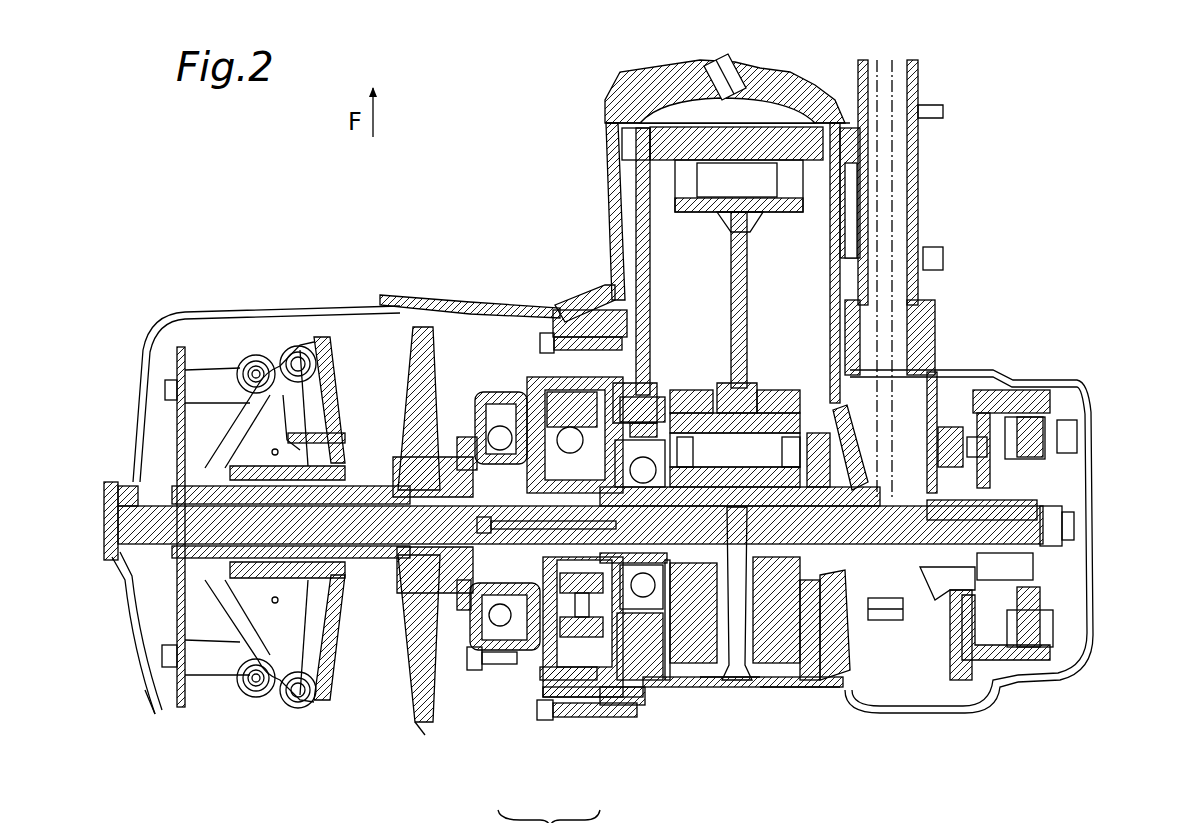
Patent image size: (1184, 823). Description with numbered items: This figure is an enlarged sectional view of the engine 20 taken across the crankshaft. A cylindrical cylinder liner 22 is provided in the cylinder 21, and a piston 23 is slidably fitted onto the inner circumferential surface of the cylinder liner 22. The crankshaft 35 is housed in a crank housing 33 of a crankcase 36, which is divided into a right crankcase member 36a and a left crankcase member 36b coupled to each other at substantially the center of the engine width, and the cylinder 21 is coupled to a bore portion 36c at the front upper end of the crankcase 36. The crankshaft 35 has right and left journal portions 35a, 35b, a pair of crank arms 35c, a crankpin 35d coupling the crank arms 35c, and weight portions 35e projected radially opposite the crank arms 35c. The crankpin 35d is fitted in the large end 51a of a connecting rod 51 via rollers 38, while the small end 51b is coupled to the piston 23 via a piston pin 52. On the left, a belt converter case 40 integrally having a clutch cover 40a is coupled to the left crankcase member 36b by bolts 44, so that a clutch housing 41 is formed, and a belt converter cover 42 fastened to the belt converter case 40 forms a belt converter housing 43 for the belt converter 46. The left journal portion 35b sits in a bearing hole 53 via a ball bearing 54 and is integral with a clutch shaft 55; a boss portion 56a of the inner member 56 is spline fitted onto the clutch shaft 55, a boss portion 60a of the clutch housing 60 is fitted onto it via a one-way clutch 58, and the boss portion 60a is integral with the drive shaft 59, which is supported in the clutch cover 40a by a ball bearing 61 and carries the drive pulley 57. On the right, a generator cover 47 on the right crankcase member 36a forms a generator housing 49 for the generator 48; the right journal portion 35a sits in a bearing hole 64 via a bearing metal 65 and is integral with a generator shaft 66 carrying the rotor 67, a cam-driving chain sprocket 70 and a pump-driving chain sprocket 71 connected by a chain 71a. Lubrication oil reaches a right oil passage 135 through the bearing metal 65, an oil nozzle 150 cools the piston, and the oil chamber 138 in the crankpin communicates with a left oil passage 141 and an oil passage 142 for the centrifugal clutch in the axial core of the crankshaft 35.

The engine 20 is at (967, 170).
The cylinder 21 is at (630, 165).
The cylinder liner 22 is at (625, 215).
The piston 23 is at (640, 142).
The crank housing 33 is at (680, 672).
The crankshaft 35 is at (843, 677).
The right journal portion 35a is at (1063, 540).
The left journal portion 35b is at (545, 380).
The crank arms 35c is at (680, 390).
The crankpin 35d is at (705, 388).
The weight portions 35e is at (700, 653).
The crankcase 36 is at (840, 745).
The right crankcase member 36a is at (783, 690).
The left crankcase member 36b is at (740, 687).
The bore portion 36c is at (615, 290).
The rollers 38 is at (730, 660).
The belt converter case 40 is at (470, 320).
The clutch cover 40a is at (515, 693).
The clutch housing 41 is at (607, 703).
The belt converter cover 42 is at (184, 315).
The belt converter housing 43 is at (145, 623).
The bolts 44 is at (560, 330).
The belt converter 46 is at (148, 680).
The generator cover 47 is at (1080, 380).
The generator 48 is at (1065, 648).
The generator housing 49 is at (1085, 600).
The connecting rod 51 is at (750, 248).
The large end 51a is at (758, 385).
The small end 51b is at (747, 137).
The piston pin 52 is at (690, 128).
The bearing hole 53 is at (622, 335).
The ball bearing 54 is at (563, 340).
The clutch shaft 55 is at (457, 590).
The inner member 56 is at (553, 673).
The boss portion 56a is at (450, 450).
The drive pulley 57 is at (292, 725).
The one-way clutch 58 is at (457, 437).
The drive shaft 59 is at (172, 498).
The clutch housing 60 is at (533, 697).
The boss portion 60a is at (458, 585).
The ball bearing 61 is at (477, 665).
The bearing hole 64 is at (870, 653).
The bearing metal 65 is at (832, 483).
The generator shaft 66 is at (997, 677).
The rotor 67 is at (1020, 677).
The chain sprocket for driving a cam 70 is at (905, 470).
The chain sprocket for driving an oil pump 71 is at (945, 440).
The chain for driving the pump 71a is at (927, 650).
The right oil passage 135 is at (785, 597).
The oil chamber 138 is at (755, 461).
The left oil passage 141 is at (665, 618).
The oil passage for the centrifugal clutch 142 is at (644, 547).
The oil nozzle 150 is at (915, 365).